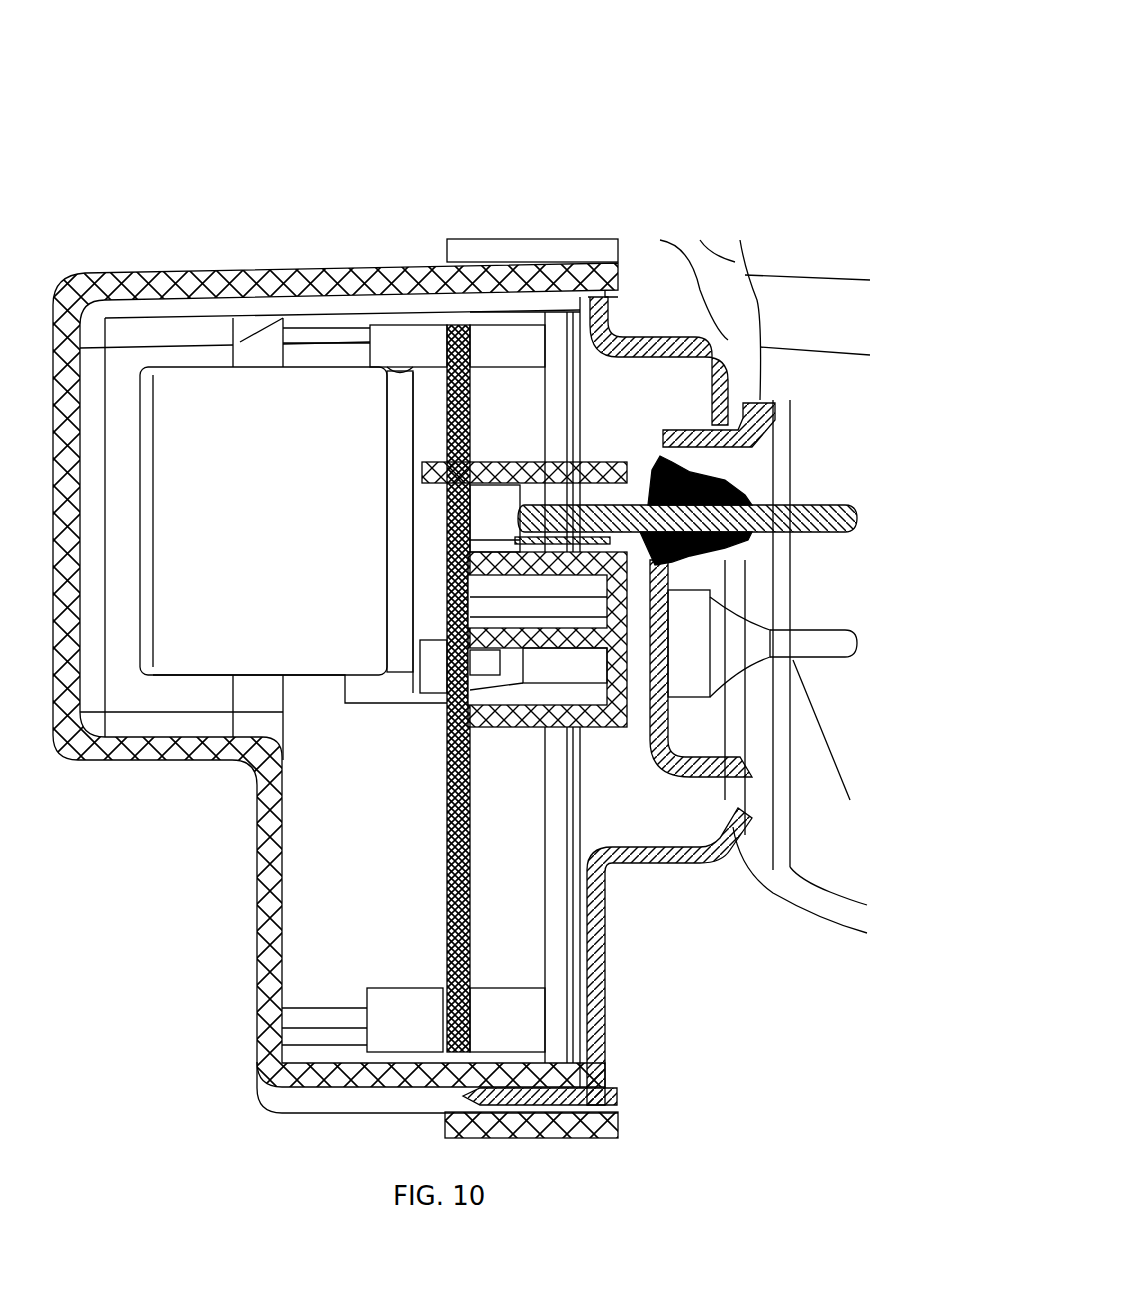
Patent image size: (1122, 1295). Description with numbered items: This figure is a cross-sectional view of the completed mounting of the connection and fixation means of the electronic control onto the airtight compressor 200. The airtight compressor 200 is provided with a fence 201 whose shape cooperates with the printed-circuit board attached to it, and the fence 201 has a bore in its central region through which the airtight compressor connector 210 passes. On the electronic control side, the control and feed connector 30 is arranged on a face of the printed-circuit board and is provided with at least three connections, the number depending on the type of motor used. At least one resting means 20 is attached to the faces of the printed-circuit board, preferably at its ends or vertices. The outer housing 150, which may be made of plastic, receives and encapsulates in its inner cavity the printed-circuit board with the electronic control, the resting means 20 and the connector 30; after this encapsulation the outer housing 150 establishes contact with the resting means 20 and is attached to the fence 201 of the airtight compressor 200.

The resting means 20 is at (507, 355).
The connector 30 is at (527, 475).
The outer housing 150 is at (263, 920).
The airtight compressor 200 is at (783, 258).
The fence 201 is at (625, 862).
The airtight compressor connector 210 is at (660, 437).